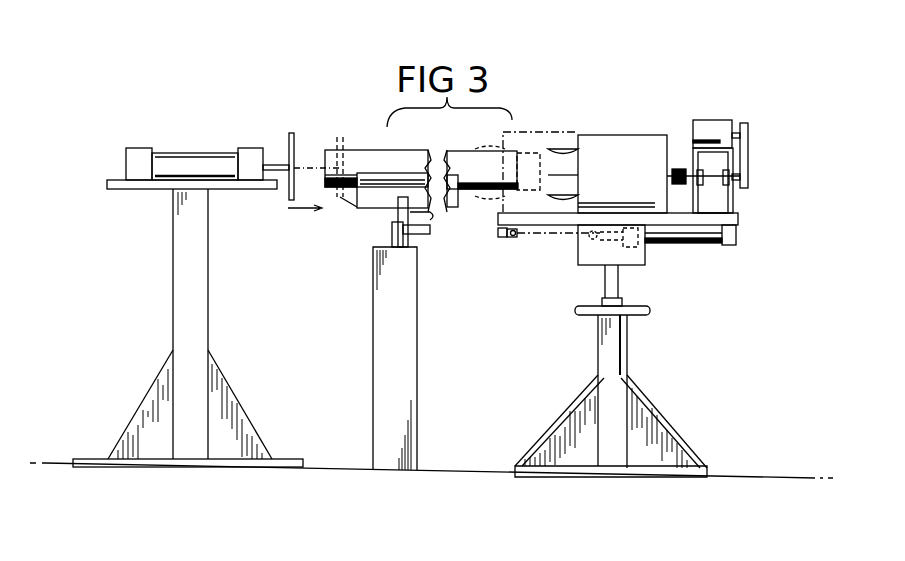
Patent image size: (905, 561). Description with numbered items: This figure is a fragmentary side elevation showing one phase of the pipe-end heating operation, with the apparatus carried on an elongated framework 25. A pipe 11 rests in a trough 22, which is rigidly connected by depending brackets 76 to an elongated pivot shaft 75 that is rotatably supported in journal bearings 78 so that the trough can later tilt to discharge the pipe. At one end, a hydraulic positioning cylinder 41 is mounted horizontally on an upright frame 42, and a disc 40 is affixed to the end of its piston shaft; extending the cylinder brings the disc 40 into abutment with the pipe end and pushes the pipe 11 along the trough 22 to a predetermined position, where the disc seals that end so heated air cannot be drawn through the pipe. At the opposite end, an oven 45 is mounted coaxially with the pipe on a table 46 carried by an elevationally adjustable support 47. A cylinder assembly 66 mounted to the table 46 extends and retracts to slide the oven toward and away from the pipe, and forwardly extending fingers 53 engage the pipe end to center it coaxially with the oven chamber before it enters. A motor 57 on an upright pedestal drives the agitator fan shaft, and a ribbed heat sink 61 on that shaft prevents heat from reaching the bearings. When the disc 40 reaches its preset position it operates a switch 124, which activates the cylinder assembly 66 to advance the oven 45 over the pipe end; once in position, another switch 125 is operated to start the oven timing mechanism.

The pipe 11 is at (396, 151).
The trough 22 is at (388, 212).
The framework 25 is at (408, 311).
The disc 40 is at (296, 132).
The hydraulic positioning cylinder 41 is at (223, 133).
The upright frame 42 is at (202, 264).
The oven 45 is at (620, 128).
The table 46 is at (738, 217).
The elevationally adjustable support 47 is at (661, 314).
The fingers 53 is at (565, 148).
The motor 57 is at (733, 112).
The heat sink 61 is at (677, 170).
The cylinder assembly 66 is at (676, 245).
The pivot shaft 75 is at (428, 236).
The depending brackets 76 is at (430, 213).
The journal bearings 78 is at (393, 224).
The switch 124 is at (362, 208).
The switch 125 is at (516, 265).